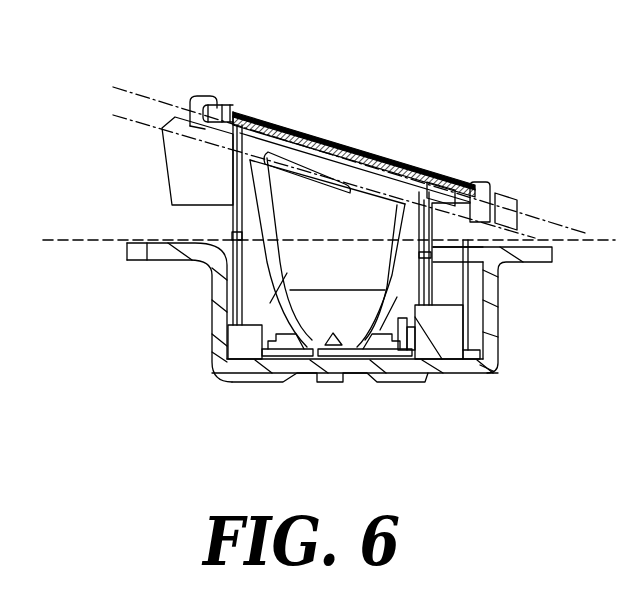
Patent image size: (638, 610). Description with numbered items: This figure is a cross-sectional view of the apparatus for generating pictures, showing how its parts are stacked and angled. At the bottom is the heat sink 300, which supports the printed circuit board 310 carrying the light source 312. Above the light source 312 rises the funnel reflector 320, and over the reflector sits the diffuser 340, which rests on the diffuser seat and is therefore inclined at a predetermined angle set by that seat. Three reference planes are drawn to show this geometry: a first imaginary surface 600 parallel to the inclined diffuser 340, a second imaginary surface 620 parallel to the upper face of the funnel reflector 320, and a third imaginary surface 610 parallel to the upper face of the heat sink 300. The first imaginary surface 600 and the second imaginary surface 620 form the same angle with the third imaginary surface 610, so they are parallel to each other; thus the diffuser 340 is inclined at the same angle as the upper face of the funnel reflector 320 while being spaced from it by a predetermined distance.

The heat sink 300 is at (460, 368).
The printed circuit board 310 is at (380, 368).
The light source 312 is at (313, 352).
The funnel reflector 320 is at (388, 285).
The diffuser 340 is at (240, 112).
The first imaginary surface 600 is at (133, 92).
The third imaginary surface 610 is at (65, 240).
The second imaginary surface 620 is at (119, 118).